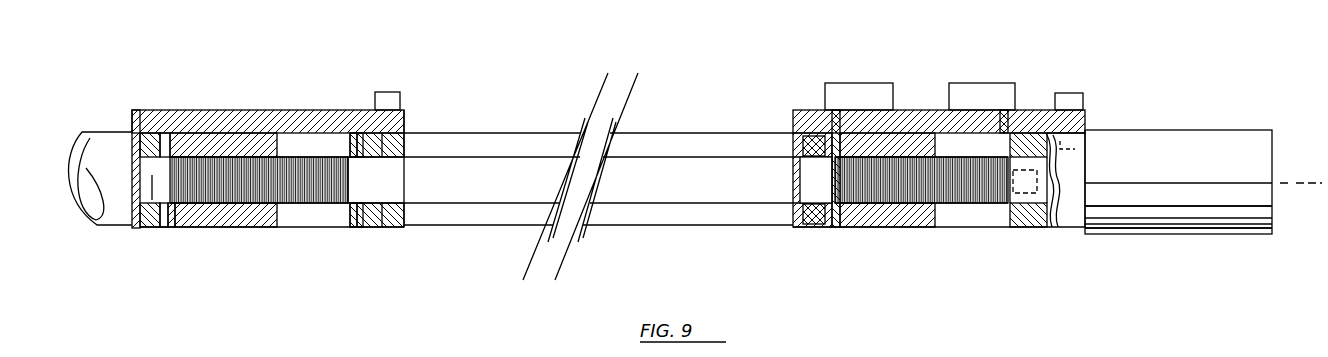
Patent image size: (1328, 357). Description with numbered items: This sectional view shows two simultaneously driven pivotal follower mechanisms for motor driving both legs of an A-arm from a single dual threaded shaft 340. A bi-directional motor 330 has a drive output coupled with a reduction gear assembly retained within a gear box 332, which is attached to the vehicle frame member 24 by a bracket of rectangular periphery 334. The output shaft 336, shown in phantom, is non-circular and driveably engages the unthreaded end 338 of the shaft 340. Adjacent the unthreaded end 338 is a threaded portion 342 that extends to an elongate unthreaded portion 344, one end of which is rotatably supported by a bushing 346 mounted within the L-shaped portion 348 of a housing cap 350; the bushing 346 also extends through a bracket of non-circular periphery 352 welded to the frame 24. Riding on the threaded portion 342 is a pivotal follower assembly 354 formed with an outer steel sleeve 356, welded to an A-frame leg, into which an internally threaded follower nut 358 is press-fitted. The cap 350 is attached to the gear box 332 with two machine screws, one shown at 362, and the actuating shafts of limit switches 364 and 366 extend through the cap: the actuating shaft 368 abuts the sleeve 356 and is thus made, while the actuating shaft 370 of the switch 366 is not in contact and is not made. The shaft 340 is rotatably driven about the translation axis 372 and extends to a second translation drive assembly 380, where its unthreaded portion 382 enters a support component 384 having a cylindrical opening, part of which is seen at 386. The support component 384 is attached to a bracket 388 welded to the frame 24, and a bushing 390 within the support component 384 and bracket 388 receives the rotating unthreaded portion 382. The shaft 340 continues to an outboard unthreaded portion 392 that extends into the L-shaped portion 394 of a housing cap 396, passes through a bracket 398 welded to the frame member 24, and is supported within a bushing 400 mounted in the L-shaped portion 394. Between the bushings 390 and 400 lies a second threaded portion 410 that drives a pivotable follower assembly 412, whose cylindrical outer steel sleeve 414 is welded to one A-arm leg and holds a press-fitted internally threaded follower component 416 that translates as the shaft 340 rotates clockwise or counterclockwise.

The vehicle frame member 24 is at (690, 133).
The bi-directional motor 330 is at (1188, 141).
The gear box 332 is at (1062, 228).
The bracket of rectangular periphery 334 is at (1015, 228).
The output shaft 336 is at (1005, 228).
The unthreaded end 338 is at (1036, 110).
The dual threaded shaft 340 is at (680, 208).
The threaded portion 342 is at (950, 228).
The elongate unthreaded portion 344 is at (706, 180).
The bushing 346 is at (815, 228).
The L-shaped portion 348 is at (805, 228).
The housing cap 350 is at (908, 104).
The bracket of non-circular periphery 352 is at (828, 228).
The pivotal follower assembly 354 is at (867, 236).
The outer steel sleeve 356 is at (920, 110).
The internally threaded follower nut 358 is at (925, 228).
The machine screw 362 is at (1075, 100).
The limit switch 364 is at (870, 92).
The limit switch 366 is at (995, 92).
The actuating shaft 368 is at (837, 122).
The actuating shaft 370 is at (1008, 110).
The translation axis 372 is at (1308, 183).
The translation drive assembly 380 is at (309, 66).
The unthreaded portion 382 is at (367, 178).
The support component 384 is at (382, 228).
The cylindrical opening 386 is at (395, 228).
The bracket 388 is at (355, 228).
The bushing 390 is at (362, 228).
The outboard unthreaded portion 392 is at (152, 228).
The L-shaped portion 394 is at (142, 228).
The housing cap 396 is at (234, 104).
The bracket 398 is at (171, 228).
The bushing 400 is at (137, 133).
The second threaded portion 410 is at (310, 228).
The pivotable follower assembly 412 is at (243, 232).
The sleeve 414 is at (213, 133).
The internally threaded follower component 416 is at (200, 140).